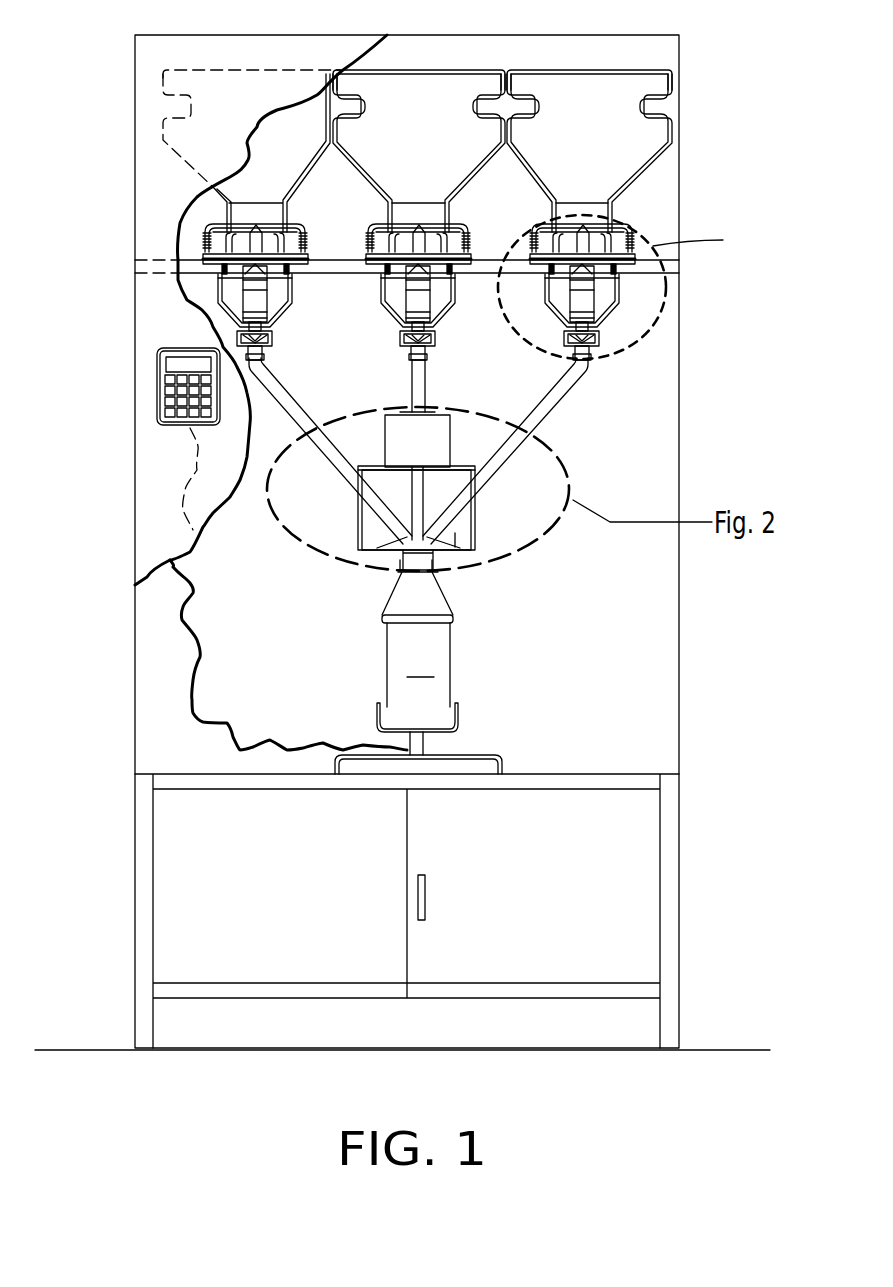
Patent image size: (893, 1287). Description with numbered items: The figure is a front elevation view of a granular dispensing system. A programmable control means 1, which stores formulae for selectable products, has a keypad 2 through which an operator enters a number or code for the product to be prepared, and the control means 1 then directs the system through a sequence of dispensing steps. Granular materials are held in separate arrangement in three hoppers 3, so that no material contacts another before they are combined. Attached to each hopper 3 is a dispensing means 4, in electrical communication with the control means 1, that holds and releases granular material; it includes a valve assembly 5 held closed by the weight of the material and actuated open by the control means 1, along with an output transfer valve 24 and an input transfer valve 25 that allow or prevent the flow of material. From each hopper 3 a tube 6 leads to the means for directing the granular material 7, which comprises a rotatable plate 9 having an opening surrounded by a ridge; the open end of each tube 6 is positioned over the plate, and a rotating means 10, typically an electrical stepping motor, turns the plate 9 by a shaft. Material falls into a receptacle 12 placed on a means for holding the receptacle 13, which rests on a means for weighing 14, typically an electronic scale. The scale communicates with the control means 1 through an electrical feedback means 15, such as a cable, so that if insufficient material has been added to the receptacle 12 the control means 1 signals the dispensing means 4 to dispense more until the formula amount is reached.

The control means 1 is at (156, 368).
The keypad 2 is at (180, 392).
The hopper 3 is at (632, 141).
The dispensing means 4 is at (643, 290).
The valve assembly 5 is at (600, 343).
The tube 6 is at (553, 415).
The means for directing the granular material 7 is at (508, 592).
The rotatable plate 9 is at (360, 532).
The rotating means 10 is at (400, 412).
The receptacle 12 is at (417, 633).
The means for holding the receptacle 13 is at (458, 718).
The means for weighing 14 is at (420, 750).
The electrical feedback means 15 is at (190, 700).
The output transfer valve 24 is at (623, 220).
The input transfer valve 25 is at (623, 265).